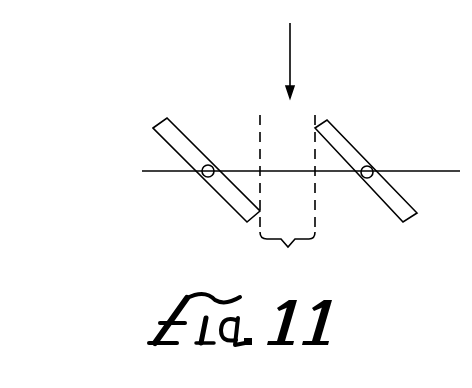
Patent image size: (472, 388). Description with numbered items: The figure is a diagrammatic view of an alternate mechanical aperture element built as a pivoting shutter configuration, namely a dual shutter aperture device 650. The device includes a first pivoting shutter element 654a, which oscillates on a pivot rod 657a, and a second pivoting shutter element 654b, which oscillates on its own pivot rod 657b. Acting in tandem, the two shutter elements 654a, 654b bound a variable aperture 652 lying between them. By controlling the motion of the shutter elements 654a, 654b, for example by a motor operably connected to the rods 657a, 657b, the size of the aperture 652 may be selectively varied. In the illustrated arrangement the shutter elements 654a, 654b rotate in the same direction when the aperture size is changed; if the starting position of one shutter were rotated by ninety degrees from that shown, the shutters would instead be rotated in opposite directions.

The dual shutter aperture device 650 is at (345, 227).
The aperture 652 is at (287, 198).
The first pivoting shutter element 654a is at (333, 128).
The second pivoting shutter element 654b is at (165, 128).
The pivot rod 657a is at (371, 167).
The pivot rod 657b is at (205, 178).